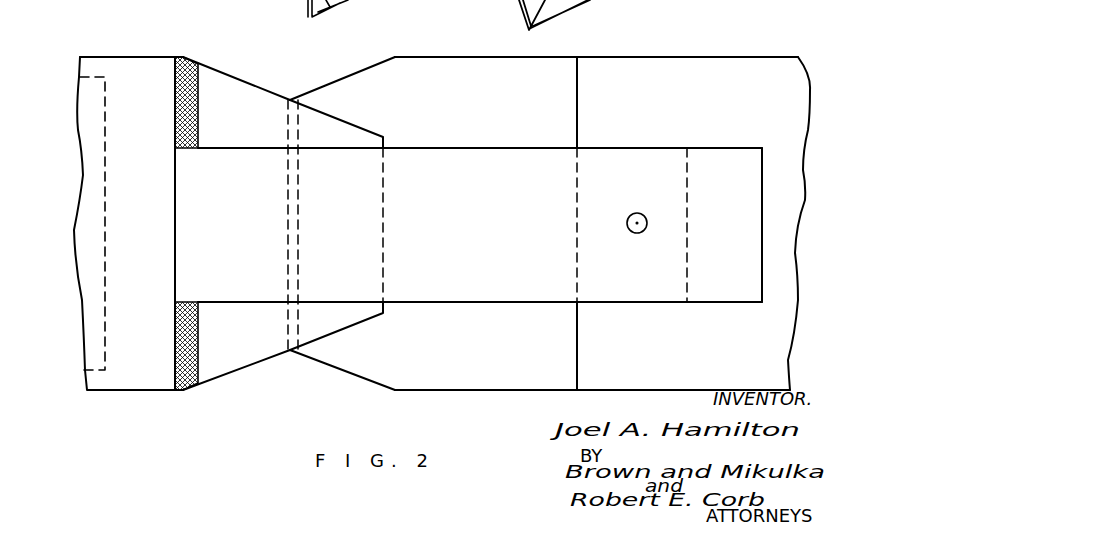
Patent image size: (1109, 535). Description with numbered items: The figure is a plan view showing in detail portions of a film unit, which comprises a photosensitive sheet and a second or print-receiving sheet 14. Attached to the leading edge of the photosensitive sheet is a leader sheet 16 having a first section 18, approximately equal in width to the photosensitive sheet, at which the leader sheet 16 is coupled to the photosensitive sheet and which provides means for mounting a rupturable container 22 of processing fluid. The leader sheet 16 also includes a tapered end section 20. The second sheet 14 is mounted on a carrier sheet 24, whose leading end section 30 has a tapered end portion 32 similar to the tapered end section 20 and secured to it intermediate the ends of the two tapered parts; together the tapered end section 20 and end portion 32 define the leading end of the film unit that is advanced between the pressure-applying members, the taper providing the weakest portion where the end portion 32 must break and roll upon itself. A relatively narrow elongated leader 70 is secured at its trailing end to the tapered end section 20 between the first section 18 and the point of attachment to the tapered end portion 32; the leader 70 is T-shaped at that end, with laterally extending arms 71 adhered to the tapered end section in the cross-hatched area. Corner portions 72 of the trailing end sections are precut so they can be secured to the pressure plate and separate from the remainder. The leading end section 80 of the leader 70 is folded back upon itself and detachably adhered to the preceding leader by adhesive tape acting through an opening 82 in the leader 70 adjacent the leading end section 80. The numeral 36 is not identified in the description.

The second or print-receiving sheet 14 is at (664, 101).
The leader sheet 16 is at (171, 52).
The first section 18 is at (140, 82).
The tapered end section 20 is at (331, 144).
The rupturable container 22 is at (88, 75).
The carrier sheet 24 is at (475, 56).
The leading end section 30 is at (486, 94).
The tapered end portion 32 is at (289, 223).
The bracket 36 is at (372, 4).
The leader 70 is at (503, 224).
The laterally extending arms 71 is at (191, 66).
The corner portions 72 is at (324, 13).
The leading end section 80 is at (738, 248).
The opening 82 is at (641, 213).